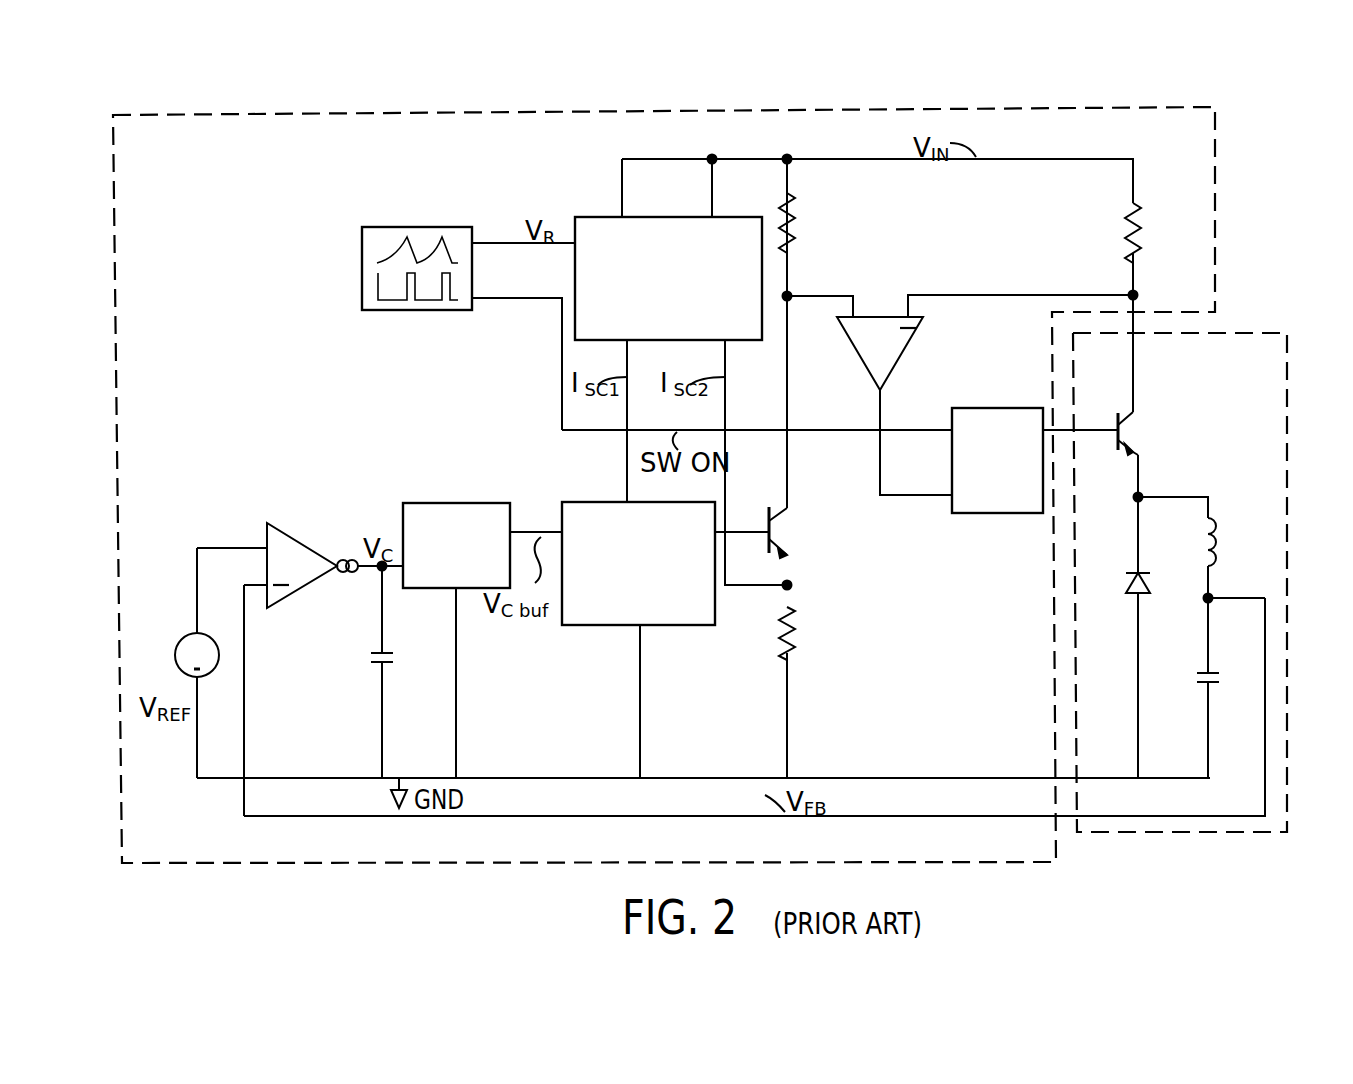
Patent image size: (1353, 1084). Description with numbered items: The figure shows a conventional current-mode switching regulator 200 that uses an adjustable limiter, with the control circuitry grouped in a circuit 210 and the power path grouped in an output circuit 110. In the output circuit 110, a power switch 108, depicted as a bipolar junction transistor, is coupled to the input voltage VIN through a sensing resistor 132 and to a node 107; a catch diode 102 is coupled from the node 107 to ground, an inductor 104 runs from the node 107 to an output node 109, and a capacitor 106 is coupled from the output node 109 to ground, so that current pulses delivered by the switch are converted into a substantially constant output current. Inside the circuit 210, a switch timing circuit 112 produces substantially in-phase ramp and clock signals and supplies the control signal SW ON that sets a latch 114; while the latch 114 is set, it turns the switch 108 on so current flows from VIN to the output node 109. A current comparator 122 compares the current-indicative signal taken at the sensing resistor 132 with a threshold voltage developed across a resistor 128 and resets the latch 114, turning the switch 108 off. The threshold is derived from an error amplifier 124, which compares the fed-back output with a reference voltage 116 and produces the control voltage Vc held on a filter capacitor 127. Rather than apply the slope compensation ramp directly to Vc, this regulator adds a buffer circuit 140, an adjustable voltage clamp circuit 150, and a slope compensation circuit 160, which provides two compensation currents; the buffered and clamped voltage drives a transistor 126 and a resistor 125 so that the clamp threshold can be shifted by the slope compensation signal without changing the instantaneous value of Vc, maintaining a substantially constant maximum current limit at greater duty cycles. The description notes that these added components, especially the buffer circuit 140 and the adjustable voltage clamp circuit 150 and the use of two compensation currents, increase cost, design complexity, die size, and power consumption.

The regulator 200 is at (1344, 80).
The circuit 210 is at (113, 262).
The output circuit 110 is at (1287, 375).
The switch timing circuit 112 is at (398, 227).
The slope compensation circuit 160 is at (600, 217).
The resistor 128 is at (778, 212).
The sensing resistor 132 is at (1125, 228).
The current comparator 122 is at (862, 315).
The latch 114 is at (998, 408).
The power switch 108 is at (1114, 420).
The node 107 is at (1138, 497).
The inductor 104 is at (1204, 558).
The output node 109 is at (1210, 597).
The catch diode 102 is at (1132, 598).
The capacitor 106 is at (1207, 686).
The error amplifier 124 is at (298, 540).
The reference voltage 116 is at (176, 647).
The capacitor 127 is at (372, 668).
The buffer circuit 140 is at (432, 503).
The adjustable voltage clamp circuit 150 is at (585, 502).
The transistor 126 is at (765, 527).
The resistor 125 is at (796, 618).